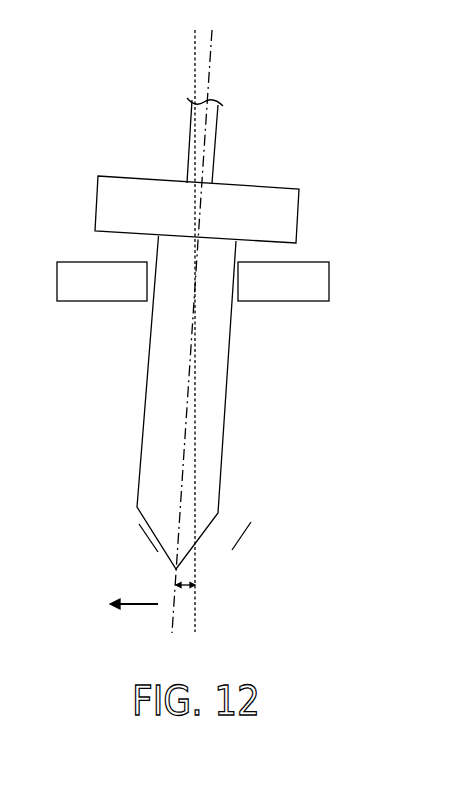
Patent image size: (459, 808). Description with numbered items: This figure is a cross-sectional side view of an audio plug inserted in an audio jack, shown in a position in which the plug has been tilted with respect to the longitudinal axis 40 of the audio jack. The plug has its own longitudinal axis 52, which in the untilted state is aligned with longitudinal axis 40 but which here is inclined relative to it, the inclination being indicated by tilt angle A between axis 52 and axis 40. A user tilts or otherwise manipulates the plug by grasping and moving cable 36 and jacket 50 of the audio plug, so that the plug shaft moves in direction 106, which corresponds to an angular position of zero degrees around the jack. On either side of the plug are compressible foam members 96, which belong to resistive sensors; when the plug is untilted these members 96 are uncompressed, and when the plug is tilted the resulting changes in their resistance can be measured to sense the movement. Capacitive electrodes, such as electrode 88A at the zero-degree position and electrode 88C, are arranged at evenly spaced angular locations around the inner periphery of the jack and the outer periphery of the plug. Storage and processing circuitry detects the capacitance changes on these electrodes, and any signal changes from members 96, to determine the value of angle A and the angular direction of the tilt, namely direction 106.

The axis 52 is at (212, 47).
The cable 36 is at (207, 132).
The jacket 50 is at (283, 205).
The compressible foam member 96 is at (97, 294).
The longitudinal axis 40 is at (195, 600).
The capacitive electrode 88A is at (150, 538).
The capacitive electrode 88C is at (238, 537).
The tilt angle A is at (185, 593).
The direction 106 is at (137, 606).